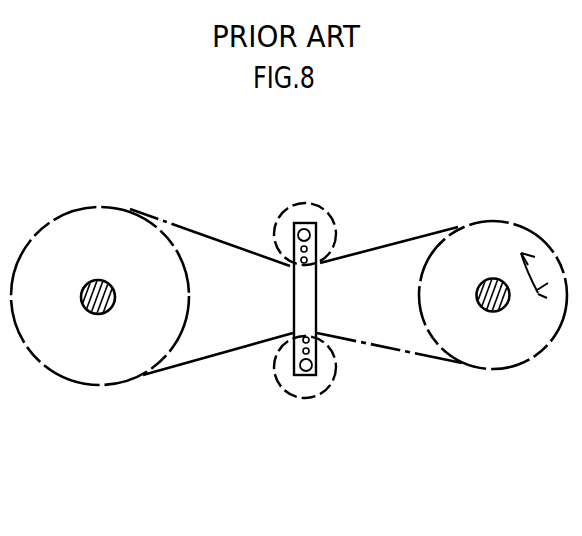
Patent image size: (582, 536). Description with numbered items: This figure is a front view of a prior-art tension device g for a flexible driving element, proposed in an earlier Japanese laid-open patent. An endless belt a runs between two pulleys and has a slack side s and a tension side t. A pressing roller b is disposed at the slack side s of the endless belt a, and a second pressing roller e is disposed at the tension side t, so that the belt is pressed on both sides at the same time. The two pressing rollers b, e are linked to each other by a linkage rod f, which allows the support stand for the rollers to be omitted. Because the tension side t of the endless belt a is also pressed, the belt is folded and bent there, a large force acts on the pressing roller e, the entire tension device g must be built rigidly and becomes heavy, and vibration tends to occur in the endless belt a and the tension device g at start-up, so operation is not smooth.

The endless belt a is at (195, 232).
The pressing roller b is at (316, 218).
The slack side s is at (384, 248).
The tension side t is at (401, 366).
The linkage rod f is at (296, 303).
The tension device g is at (329, 393).
The pressing roller e is at (280, 385).